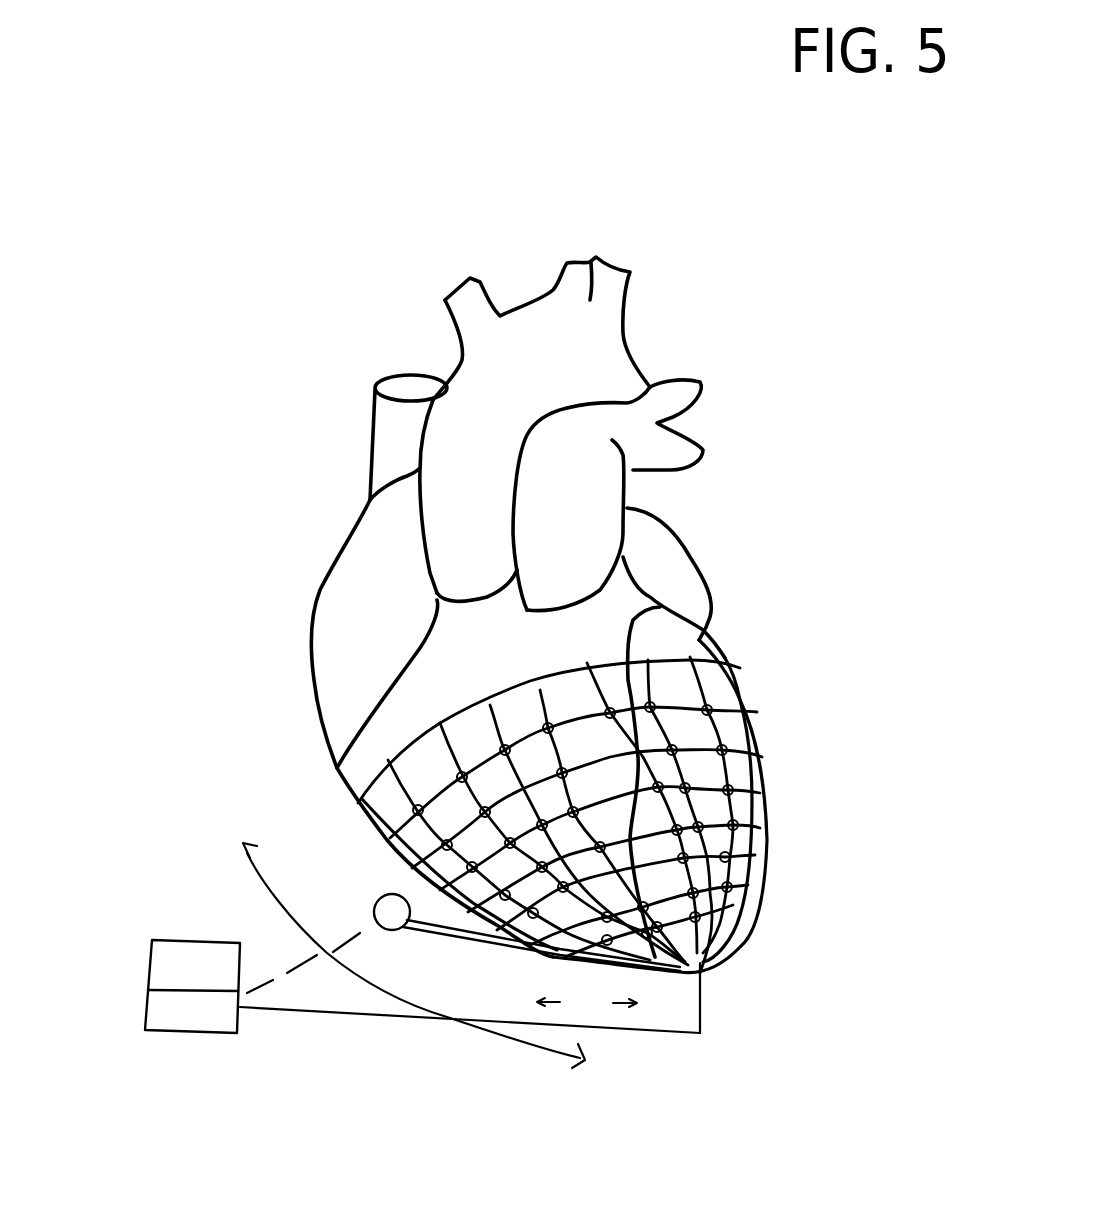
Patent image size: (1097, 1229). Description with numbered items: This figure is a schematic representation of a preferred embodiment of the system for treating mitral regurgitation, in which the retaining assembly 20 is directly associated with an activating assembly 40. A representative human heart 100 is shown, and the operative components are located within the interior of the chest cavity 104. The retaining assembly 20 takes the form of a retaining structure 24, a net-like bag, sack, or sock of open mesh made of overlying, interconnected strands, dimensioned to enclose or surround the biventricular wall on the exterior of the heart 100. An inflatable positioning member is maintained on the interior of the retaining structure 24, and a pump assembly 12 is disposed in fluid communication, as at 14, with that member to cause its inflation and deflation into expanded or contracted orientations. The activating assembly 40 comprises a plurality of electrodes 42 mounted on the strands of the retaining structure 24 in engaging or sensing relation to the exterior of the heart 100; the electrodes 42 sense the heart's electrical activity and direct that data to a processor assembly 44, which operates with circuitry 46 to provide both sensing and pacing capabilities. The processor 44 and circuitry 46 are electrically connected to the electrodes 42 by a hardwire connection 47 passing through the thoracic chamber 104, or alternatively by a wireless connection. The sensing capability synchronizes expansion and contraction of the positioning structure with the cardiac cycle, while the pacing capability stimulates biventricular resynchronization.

The heart 100 is at (764, 432).
The retaining assembly 20 is at (770, 768).
The retaining structure 24 is at (750, 695).
The electrodes 42 is at (548, 724).
The pump assembly 12 is at (384, 888).
The fluid communication 14 is at (460, 947).
The activating assembly 40 is at (184, 914).
The processor assembly 44 is at (153, 940).
The circuitry 46 is at (200, 1033).
The chest cavity 104 is at (587, 1004).
The hardwire connection 47 is at (700, 1013).